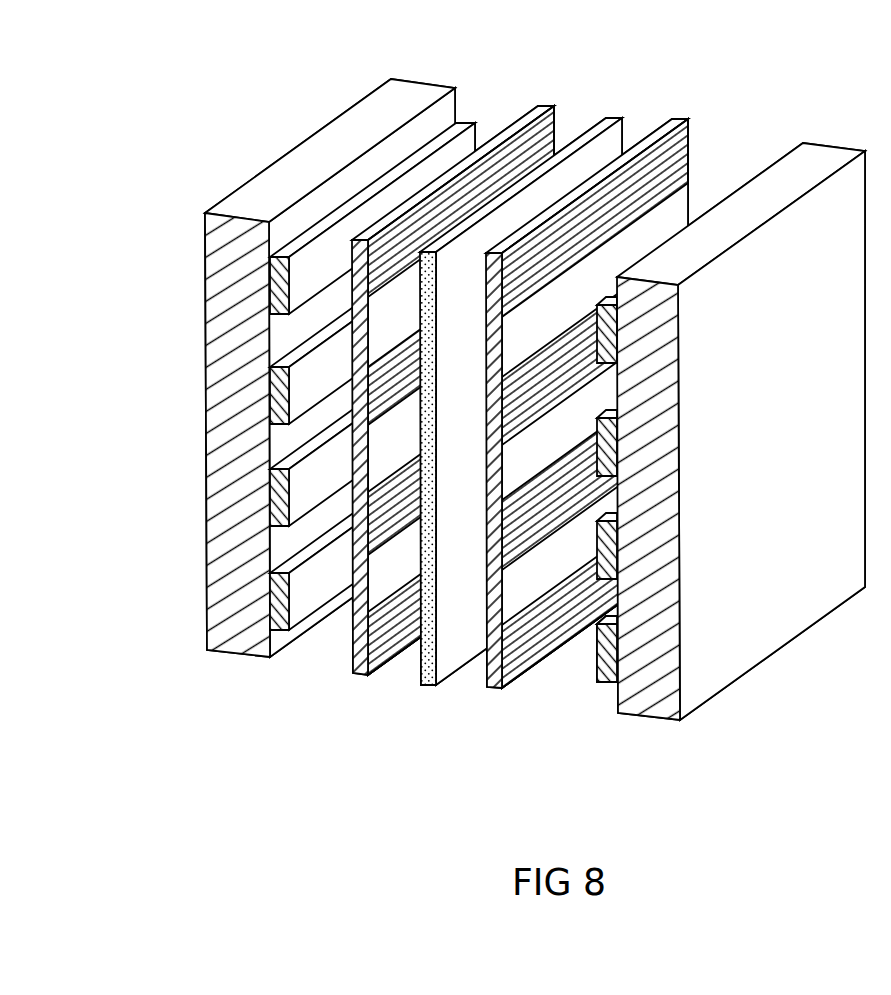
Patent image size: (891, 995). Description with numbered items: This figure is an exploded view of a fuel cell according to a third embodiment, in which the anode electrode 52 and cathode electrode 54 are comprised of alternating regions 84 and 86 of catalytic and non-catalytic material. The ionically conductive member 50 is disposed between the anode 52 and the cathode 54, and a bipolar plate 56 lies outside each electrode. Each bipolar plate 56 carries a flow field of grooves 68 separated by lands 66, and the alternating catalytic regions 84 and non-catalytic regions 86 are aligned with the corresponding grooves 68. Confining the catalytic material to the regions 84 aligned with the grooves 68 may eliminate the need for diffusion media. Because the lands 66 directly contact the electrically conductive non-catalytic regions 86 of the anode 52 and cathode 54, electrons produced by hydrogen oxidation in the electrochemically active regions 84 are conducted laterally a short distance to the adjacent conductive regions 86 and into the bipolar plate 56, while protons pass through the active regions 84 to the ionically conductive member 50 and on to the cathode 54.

The ionically conductive member 50 is at (607, 119).
The anode electrode 52 is at (360, 673).
The cathode electrode 54 is at (493, 690).
The bipolar plate 56 is at (417, 95).
The land 66 is at (283, 610).
The groove 68 is at (441, 437).
The catalytic region 84 is at (563, 127).
The non-catalytic region 86 is at (389, 577).